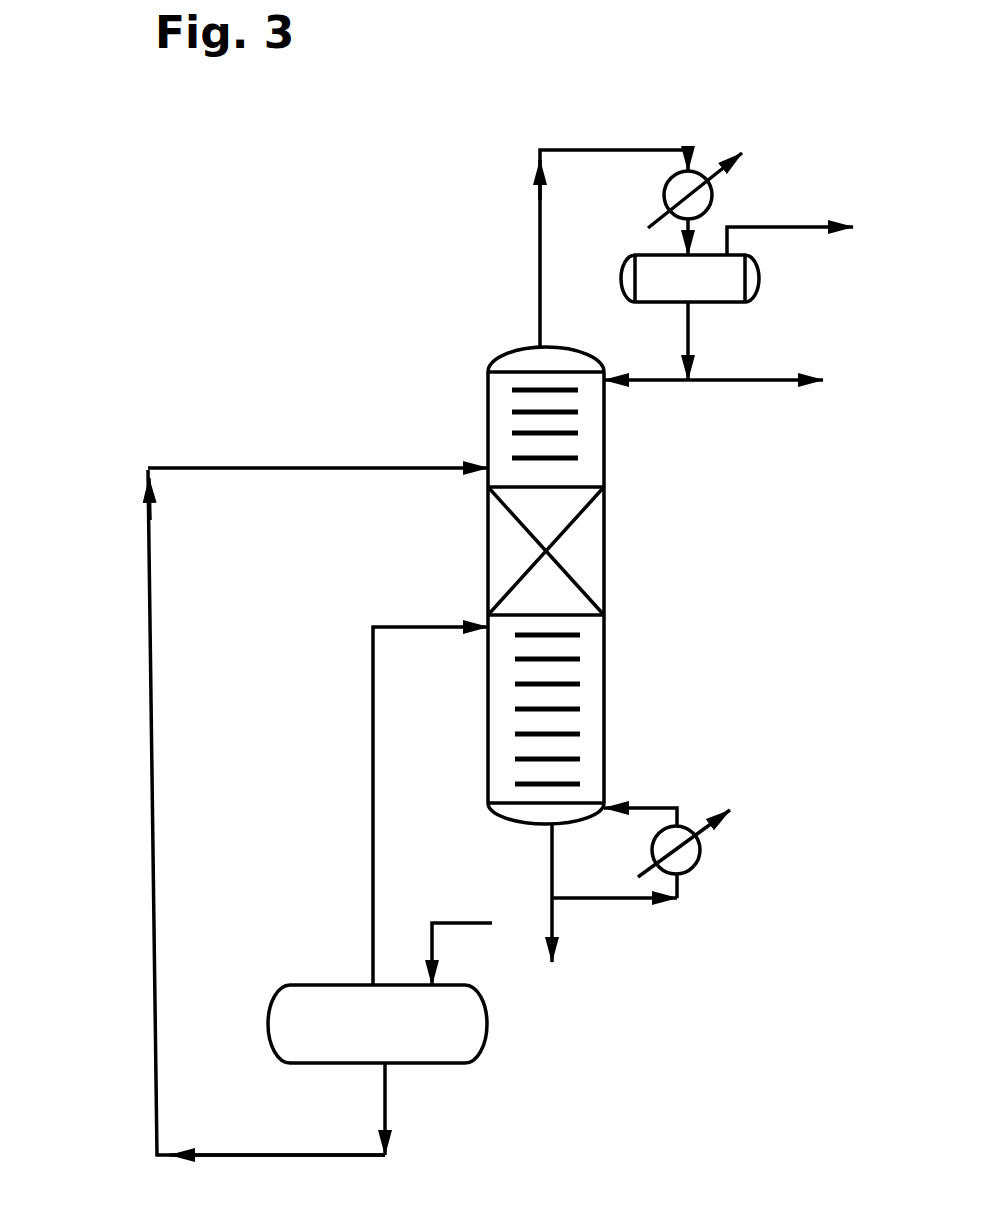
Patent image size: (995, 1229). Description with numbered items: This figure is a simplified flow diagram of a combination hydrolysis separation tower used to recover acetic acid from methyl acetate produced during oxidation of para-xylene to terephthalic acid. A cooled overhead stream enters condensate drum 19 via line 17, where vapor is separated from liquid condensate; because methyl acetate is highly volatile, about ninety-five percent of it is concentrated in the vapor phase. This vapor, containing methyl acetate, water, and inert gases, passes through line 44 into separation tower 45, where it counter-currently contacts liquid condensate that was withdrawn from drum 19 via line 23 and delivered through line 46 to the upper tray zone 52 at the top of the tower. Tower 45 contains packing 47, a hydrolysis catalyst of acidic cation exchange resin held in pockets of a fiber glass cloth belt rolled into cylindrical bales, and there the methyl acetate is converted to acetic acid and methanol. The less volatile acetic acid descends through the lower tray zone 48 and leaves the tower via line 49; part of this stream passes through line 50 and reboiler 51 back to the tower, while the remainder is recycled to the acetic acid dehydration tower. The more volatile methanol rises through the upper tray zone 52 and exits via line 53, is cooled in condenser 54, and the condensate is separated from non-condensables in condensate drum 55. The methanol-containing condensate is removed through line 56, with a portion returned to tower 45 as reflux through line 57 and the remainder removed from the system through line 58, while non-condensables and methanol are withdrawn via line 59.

The line 17 is at (460, 925).
The condensate drum 19 is at (487, 1025).
The line 23 is at (388, 1100).
The line 44 is at (372, 822).
The separation tower 45 is at (605, 633).
The line 46 is at (148, 812).
The packing 47 is at (593, 552).
The lower tray zone 48 is at (580, 708).
The line 49 is at (550, 860).
The line 50 is at (627, 900).
The reboiler 51 is at (702, 858).
The upper tray zone 52 is at (497, 412).
The line 53 is at (537, 260).
The condenser 54 is at (700, 170).
The condensate drum 55 is at (752, 275).
The line 56 is at (690, 332).
The line 57 is at (650, 383).
The line 58 is at (755, 383).
The line 59 is at (798, 225).